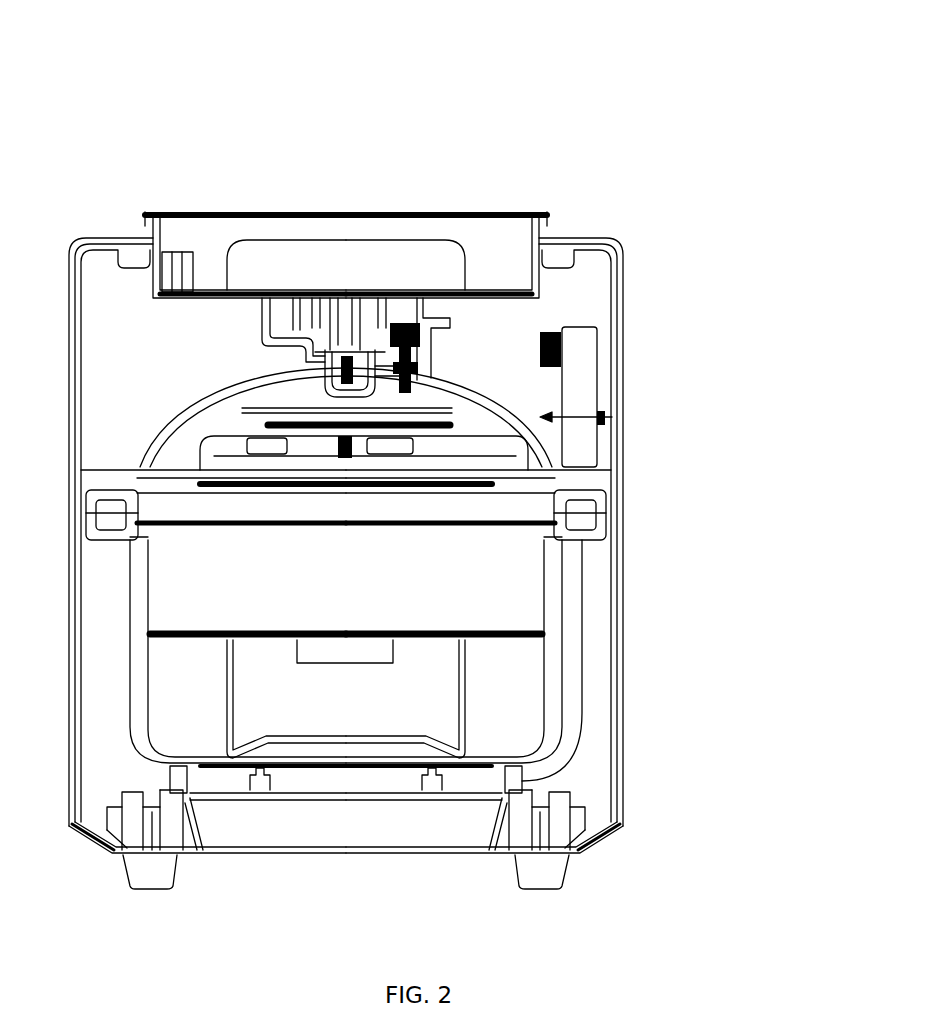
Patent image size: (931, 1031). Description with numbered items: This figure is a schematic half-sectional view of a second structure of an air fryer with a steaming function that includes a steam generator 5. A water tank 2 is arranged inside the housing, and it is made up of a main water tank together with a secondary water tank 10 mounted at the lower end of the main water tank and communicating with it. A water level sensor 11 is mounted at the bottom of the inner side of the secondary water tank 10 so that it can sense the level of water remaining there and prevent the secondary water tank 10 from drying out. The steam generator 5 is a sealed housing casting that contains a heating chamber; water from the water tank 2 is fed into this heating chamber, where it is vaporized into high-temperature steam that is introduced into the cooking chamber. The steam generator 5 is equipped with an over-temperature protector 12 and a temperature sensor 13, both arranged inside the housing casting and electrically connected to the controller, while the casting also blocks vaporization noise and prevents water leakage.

The water tank 2 is at (333, 240).
The secondary water tank 10 is at (392, 313).
The water level sensor 11 is at (423, 323).
The over-temperature protector 12 is at (560, 332).
The steam generator 5 is at (583, 397).
The temperature sensor 13 is at (560, 417).